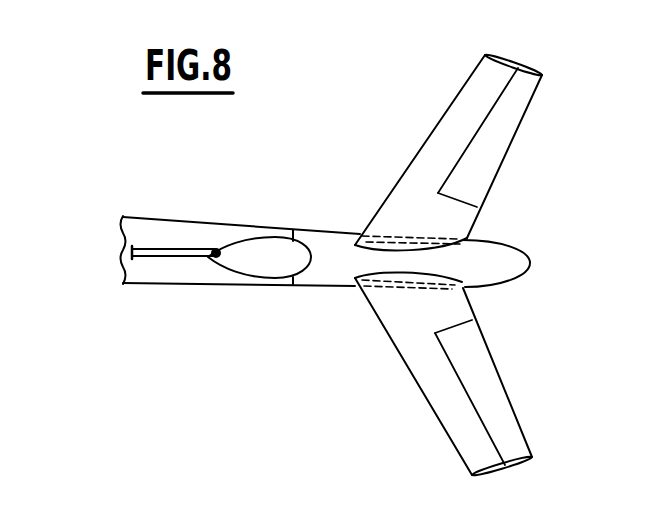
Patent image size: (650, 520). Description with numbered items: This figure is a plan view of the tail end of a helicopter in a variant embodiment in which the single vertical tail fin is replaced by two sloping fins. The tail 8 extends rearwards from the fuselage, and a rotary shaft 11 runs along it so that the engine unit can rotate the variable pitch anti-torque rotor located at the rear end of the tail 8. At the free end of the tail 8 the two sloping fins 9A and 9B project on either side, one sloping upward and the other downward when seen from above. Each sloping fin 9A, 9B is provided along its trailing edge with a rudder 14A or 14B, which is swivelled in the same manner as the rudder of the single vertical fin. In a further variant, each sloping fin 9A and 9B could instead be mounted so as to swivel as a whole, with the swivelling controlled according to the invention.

The tail 8 is at (167, 270).
The rotary shaft 11 is at (161, 248).
The sloping fin 9A is at (413, 342).
The sloping fin 9B is at (422, 188).
The rudder 14A is at (480, 375).
The rudder 14B is at (503, 128).